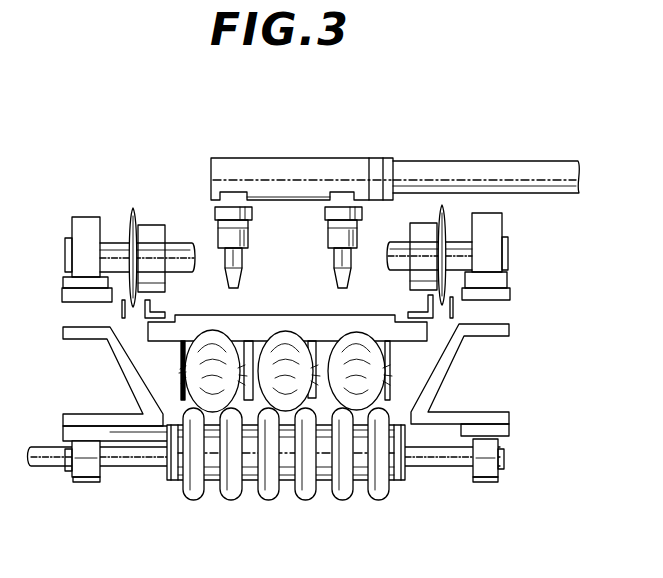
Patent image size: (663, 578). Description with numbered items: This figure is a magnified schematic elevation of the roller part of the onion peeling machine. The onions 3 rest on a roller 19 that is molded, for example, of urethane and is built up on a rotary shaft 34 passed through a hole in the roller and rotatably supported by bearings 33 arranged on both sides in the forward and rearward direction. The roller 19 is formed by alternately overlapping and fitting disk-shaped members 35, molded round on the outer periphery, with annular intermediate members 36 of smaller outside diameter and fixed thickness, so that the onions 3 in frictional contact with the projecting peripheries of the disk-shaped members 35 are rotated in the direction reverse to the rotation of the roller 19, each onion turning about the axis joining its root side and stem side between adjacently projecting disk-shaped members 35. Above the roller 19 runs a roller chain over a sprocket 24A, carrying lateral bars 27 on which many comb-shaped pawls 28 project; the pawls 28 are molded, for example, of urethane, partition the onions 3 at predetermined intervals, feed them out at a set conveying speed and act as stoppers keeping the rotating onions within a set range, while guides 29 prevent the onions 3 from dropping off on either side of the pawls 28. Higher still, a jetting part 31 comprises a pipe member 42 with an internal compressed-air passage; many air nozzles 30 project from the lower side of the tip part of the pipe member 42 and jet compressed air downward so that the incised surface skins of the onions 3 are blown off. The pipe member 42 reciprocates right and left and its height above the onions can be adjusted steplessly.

The onion 3 is at (390, 385).
The roller 19 is at (264, 483).
The sprocket 24A is at (128, 218).
The lateral bar 27 is at (203, 330).
The comb-shaped pawl 28 is at (262, 333).
The guide 29 is at (125, 366).
The air nozzle 30 is at (226, 275).
The jetting part 31 is at (268, 150).
The bearing 33 is at (83, 483).
The rotary shaft 34 is at (136, 468).
The disk-shaped member 35 is at (196, 497).
The annular intermediate member 36 is at (214, 478).
The pipe member 42 is at (435, 162).